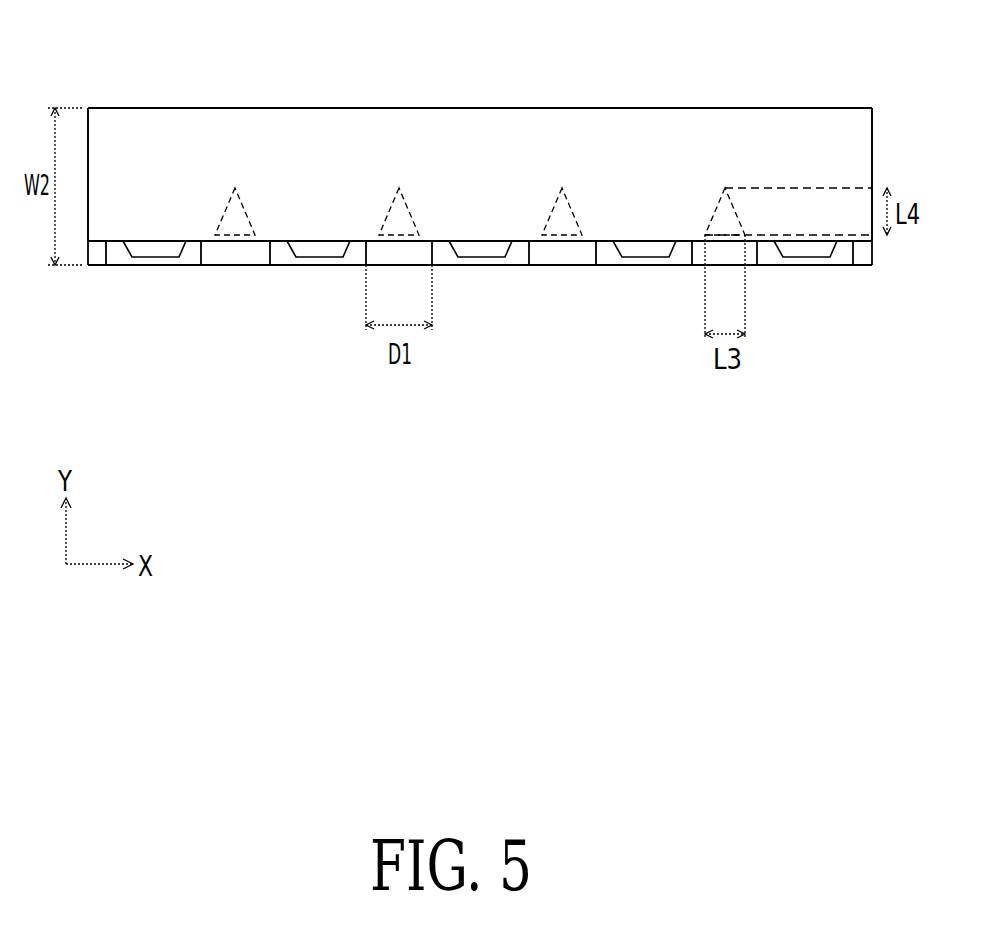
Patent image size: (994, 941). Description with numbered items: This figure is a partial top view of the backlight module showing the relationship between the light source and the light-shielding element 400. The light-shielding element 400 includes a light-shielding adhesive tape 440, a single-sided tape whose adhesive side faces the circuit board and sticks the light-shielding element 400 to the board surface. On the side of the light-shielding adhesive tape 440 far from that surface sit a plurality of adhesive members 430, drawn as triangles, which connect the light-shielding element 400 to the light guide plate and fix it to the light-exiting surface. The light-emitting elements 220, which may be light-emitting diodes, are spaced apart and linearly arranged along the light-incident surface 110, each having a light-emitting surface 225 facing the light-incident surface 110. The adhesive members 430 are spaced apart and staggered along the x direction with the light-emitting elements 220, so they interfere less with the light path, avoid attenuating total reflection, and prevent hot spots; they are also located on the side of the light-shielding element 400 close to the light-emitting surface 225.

The light-shielding element 400 is at (480, 125).
The light-shielding adhesive tape 440 is at (161, 136).
The adhesive members 430 is at (227, 213).
The light-emitting elements 220 is at (105, 246).
The light-emitting surface 225 is at (170, 241).
The light-incident surface 110 is at (857, 267).